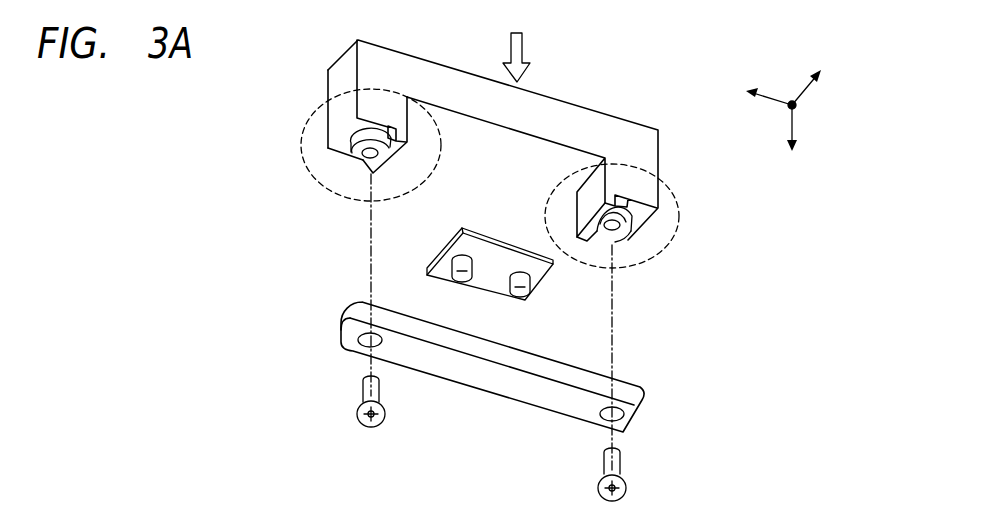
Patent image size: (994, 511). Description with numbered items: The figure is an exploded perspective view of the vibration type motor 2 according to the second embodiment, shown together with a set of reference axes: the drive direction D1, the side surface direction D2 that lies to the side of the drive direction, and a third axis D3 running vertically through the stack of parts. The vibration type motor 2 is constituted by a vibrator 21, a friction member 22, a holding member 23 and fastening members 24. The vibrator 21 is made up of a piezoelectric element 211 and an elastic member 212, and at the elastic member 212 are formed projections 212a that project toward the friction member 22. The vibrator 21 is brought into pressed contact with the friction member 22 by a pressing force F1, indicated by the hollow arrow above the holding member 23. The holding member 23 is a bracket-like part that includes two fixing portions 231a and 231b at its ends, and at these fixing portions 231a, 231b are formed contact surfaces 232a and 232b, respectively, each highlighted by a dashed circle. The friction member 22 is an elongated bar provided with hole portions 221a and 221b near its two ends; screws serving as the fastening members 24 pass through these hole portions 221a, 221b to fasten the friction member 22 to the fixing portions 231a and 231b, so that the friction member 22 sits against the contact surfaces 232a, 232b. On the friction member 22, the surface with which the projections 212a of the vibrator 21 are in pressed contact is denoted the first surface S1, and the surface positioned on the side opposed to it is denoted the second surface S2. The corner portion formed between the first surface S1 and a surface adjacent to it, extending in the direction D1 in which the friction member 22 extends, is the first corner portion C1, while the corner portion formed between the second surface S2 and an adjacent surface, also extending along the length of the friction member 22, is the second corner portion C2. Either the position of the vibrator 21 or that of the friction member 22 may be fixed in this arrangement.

The vibration type motor 2 is at (168, 127).
The vibrator 21 is at (470, 219).
The piezoelectric element 211 is at (505, 242).
The elastic member 212 is at (443, 255).
The projections 212a is at (462, 282).
The friction member 22 is at (548, 370).
The hole portion 221a is at (365, 345).
The hole portion 221b is at (623, 420).
The holding member 23 is at (537, 109).
The fixing portion 231a is at (307, 113).
The fixing portion 231b is at (682, 224).
The contact surface 232a is at (357, 157).
The contact surface 232b is at (629, 242).
The fastening members 24 is at (356, 391).
The first corner portion C1 is at (577, 366).
The second corner portion C2 is at (473, 357).
The first surface S1 is at (632, 378).
The second surface S2 is at (512, 385).
The pressing force F1 is at (506, 57).
The drive direction D1 is at (761, 111).
The side surface direction D2 is at (820, 87).
The direction D3 is at (790, 144).